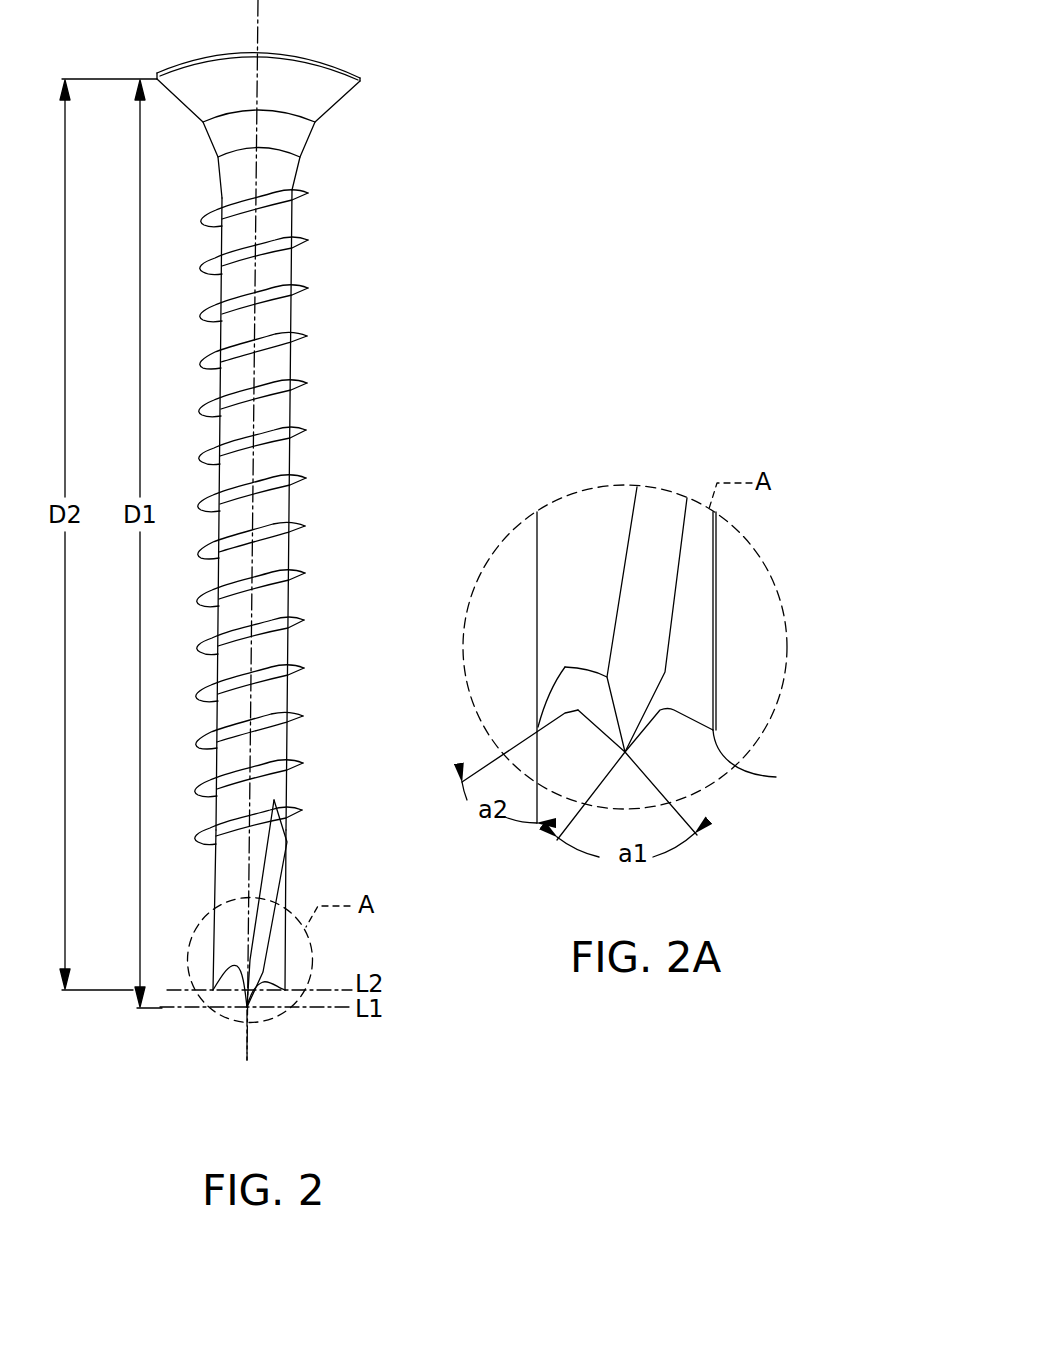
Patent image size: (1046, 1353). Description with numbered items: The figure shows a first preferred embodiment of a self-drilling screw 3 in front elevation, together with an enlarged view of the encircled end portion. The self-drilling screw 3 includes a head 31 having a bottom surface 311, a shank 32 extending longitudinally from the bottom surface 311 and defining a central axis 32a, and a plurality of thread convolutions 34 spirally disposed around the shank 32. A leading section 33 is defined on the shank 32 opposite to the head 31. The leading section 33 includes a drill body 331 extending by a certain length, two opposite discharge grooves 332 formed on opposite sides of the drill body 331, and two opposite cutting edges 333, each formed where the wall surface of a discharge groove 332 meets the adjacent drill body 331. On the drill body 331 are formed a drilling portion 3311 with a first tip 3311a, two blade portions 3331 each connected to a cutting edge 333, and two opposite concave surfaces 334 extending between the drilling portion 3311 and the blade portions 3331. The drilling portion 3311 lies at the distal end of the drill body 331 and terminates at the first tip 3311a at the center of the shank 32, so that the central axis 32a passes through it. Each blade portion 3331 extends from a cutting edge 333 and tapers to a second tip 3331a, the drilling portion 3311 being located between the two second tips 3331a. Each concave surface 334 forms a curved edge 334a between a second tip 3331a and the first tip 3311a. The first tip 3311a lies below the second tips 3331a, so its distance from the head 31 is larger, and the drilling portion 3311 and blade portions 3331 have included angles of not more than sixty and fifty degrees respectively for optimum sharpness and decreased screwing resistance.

In FIG. 2, the self-drilling screw 3 is at (492, 72).
In FIG. 2, the head 31 is at (336, 62).
In FIG. 2, the bottom surface 311 is at (320, 108).
In FIG. 2, the shank 32 is at (276, 278).
In FIG. 2, the central axis 32a is at (252, 1065).
In FIG. 2, the leading section 33 is at (290, 889).
In FIG. 2A, the leading section 33 is at (531, 572).
In FIG. 2, the drill body 331 is at (243, 874).
In FIG. 2A, the drill body 331 is at (592, 527).
In FIG. 2A, the discharge grooves 332 is at (690, 592).
In FIG. 2A, the cutting edges 333 is at (718, 625).
In FIG. 2A, the blade portions 3331 is at (720, 722).
In FIG. 2A, the second tip 3331a is at (783, 760).
In FIG. 2A, the drilling portion 3311 is at (646, 734).
In FIG. 2A, the first tip 3311a is at (625, 752).
In FIG. 2A, the concave surface 334 is at (573, 690).
In FIG. 2A, the curved edge 334a is at (550, 716).
In FIG. 2, the thread convolutions 34 is at (294, 333).